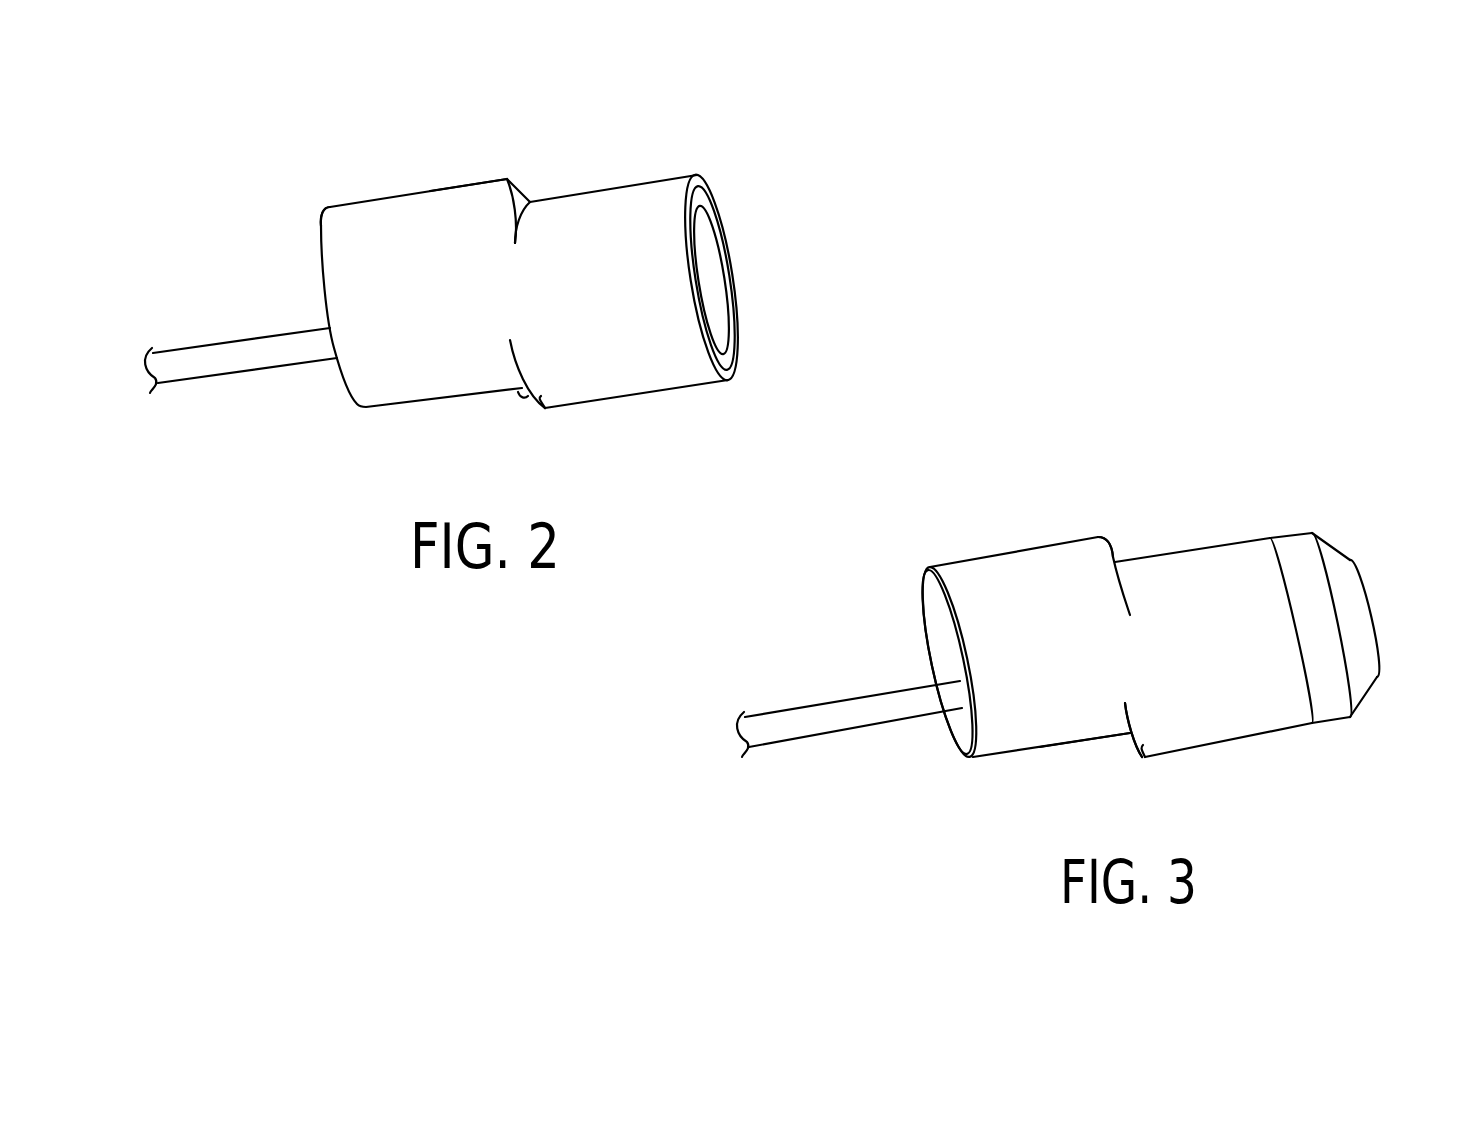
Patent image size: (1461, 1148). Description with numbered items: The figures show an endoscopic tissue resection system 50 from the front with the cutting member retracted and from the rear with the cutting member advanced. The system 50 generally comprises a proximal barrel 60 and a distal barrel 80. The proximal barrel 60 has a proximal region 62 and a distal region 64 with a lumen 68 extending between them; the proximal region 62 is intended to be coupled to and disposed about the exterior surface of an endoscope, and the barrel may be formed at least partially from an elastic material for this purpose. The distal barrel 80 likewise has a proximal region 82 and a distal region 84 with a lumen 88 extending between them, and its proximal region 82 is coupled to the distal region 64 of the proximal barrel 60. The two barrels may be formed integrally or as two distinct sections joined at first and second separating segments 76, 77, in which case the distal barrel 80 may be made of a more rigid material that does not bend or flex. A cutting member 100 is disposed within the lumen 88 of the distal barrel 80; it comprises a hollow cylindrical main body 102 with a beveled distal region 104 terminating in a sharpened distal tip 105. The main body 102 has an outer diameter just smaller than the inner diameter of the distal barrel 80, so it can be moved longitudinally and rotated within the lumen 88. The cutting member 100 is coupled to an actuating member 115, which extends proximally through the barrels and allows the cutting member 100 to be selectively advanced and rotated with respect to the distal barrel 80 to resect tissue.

In FIG. 2, the endoscopic tissue resection system 50 is at (292, 217).
In FIG. 2, the proximal barrel 60 is at (442, 368).
In FIG. 3, the proximal barrel 60 is at (1027, 582).
In FIG. 2, the proximal region of the proximal barrel 62 is at (330, 217).
In FIG. 3, the proximal region of the proximal barrel 62 is at (977, 758).
In FIG. 2, the distal region of the proximal barrel 64 is at (498, 188).
In FIG. 3, the distal region of the proximal barrel 64 is at (1120, 727).
In FIG. 3, the lumen of the proximal barrel 68 is at (940, 632).
In FIG. 2, the first separating segment 76 is at (520, 197).
In FIG. 3, the first separating segment 76 is at (1113, 551).
In FIG. 2, the second separating segment 77 is at (523, 396).
In FIG. 3, the second separating segment 77 is at (1125, 751).
In FIG. 2, the distal barrel 80 is at (621, 366).
In FIG. 3, the distal barrel 80 is at (1200, 576).
In FIG. 2, the proximal region of the distal barrel 82 is at (543, 404).
In FIG. 3, the proximal region of the distal barrel 82 is at (1145, 748).
In FIG. 2, the distal region of the distal barrel 84 is at (717, 378).
In FIG. 3, the distal region of the distal barrel 84 is at (1298, 724).
In FIG. 2, the lumen of the distal barrel 88 is at (723, 263).
In FIG. 2, the cutting member 100 is at (712, 288).
In FIG. 3, the cutting member 100 is at (1297, 557).
In FIG. 3, the cylindrical main body 102 is at (1330, 711).
In FIG. 3, the beveled distal region 104 is at (1367, 673).
In FIG. 3, the sharpened distal tip 105 is at (1375, 620).
In FIG. 2, the actuating member 115 is at (240, 364).
In FIG. 3, the actuating member 115 is at (840, 721).